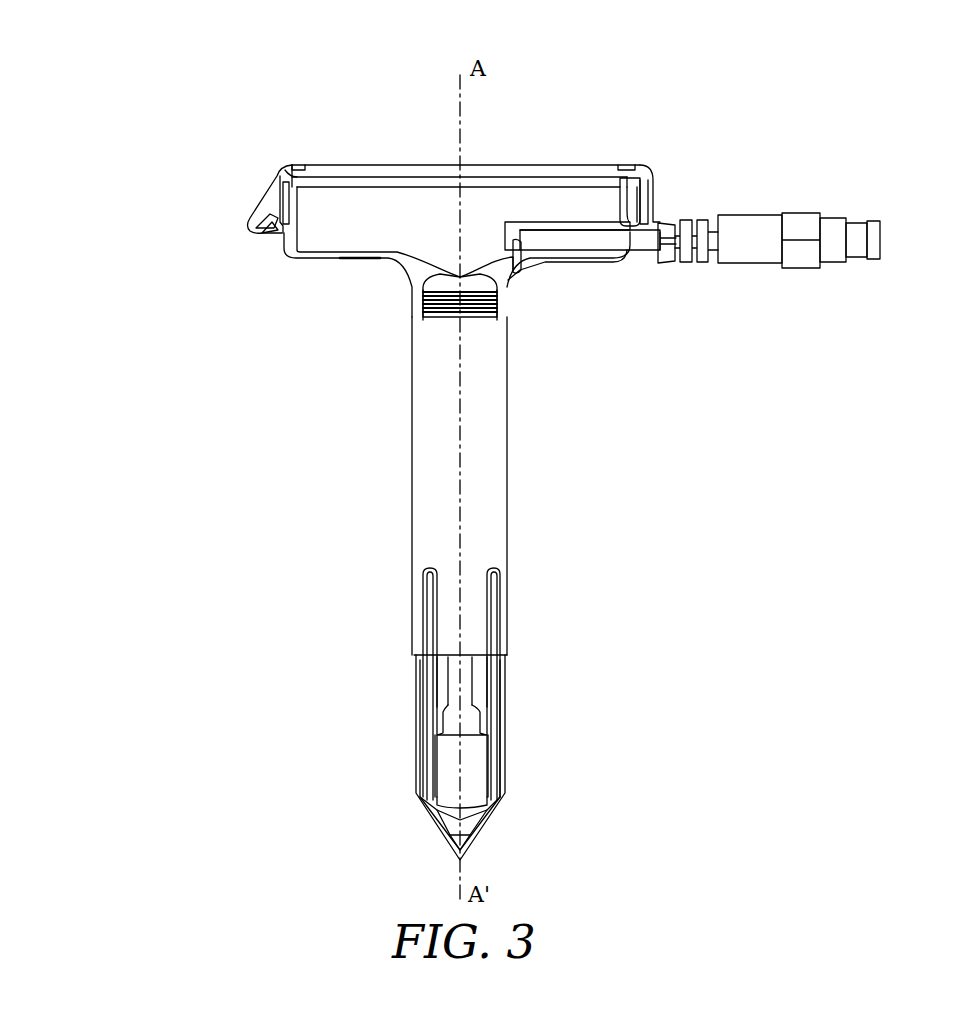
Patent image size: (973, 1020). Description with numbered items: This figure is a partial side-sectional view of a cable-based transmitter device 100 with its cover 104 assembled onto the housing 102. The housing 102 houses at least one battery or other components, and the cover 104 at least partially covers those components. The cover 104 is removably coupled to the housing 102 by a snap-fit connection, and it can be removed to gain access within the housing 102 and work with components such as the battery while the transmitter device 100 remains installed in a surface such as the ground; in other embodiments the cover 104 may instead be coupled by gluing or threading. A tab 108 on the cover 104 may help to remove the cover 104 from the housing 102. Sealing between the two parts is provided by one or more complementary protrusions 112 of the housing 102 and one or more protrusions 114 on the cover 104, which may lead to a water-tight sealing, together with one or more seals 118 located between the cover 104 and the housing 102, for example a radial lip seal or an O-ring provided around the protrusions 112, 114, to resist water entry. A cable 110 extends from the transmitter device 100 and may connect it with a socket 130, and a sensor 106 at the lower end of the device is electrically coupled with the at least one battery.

The transmitter device 100 is at (815, 98).
The housing 102 is at (315, 270).
The cover 104 is at (545, 138).
The sensor 106 is at (508, 668).
The tab 108 is at (243, 217).
The cable 110 is at (637, 258).
The complementary protrusions 112 is at (276, 207).
The protrusions 114 is at (268, 232).
The seals 118 is at (645, 185).
The socket 130 is at (803, 254).